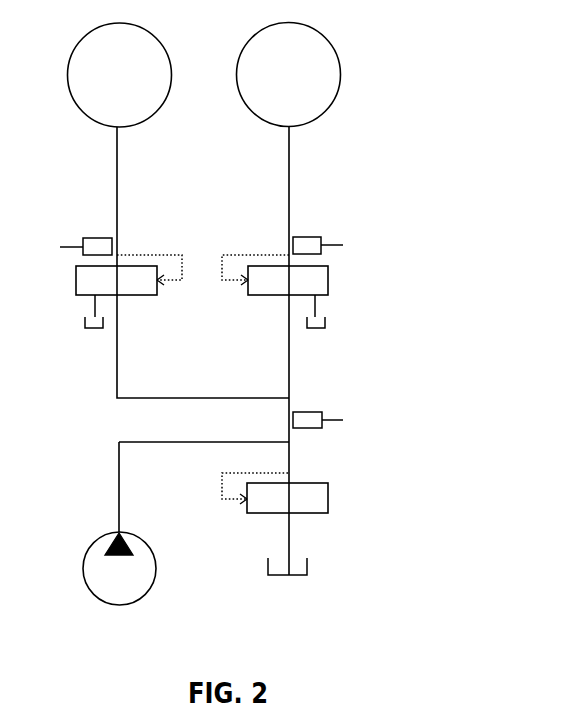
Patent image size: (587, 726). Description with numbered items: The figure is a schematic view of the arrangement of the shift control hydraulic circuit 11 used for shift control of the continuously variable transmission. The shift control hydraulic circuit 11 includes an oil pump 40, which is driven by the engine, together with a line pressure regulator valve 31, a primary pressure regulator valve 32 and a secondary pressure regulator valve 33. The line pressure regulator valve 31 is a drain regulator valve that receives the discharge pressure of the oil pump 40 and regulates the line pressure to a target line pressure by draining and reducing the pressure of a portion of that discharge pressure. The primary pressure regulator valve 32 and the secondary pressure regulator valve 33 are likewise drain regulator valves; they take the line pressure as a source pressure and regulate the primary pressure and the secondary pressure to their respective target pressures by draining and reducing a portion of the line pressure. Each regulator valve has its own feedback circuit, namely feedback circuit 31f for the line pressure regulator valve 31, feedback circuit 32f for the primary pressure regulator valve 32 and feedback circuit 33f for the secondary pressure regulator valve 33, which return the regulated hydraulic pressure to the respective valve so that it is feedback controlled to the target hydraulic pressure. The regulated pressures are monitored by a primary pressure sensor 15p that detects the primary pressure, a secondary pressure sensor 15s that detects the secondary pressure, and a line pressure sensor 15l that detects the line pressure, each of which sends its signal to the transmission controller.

The shift control hydraulic circuit 11 is at (445, 556).
The primary pressure sensor 15p is at (96, 243).
The secondary pressure sensor 15s is at (307, 243).
The line pressure sensor 15l is at (305, 418).
The line pressure regulator valve 31 is at (313, 500).
The feedback circuit 31f is at (221, 490).
The primary pressure regulator valve 32 is at (103, 283).
The feedback circuit 32f is at (160, 253).
The secondary pressure regulator valve 33 is at (312, 275).
The feedback circuit 33f is at (235, 253).
The oil pump 40 is at (97, 575).